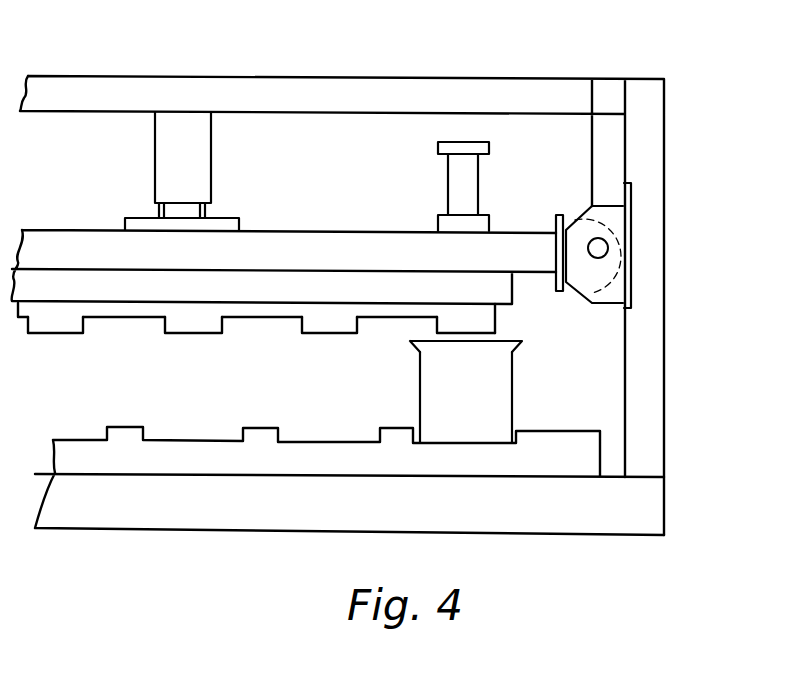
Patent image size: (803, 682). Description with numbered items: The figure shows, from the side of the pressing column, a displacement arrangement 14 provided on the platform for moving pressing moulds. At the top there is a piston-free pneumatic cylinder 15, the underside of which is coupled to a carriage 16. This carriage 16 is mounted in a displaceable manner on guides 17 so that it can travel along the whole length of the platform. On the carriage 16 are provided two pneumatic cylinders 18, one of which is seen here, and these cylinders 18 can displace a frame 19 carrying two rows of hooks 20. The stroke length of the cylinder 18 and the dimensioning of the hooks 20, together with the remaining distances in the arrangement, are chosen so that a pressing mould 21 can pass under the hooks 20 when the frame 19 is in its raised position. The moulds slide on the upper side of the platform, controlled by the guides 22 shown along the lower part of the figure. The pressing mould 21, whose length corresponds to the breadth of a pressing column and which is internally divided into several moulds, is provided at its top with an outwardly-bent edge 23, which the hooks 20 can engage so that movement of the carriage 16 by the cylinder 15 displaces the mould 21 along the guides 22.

The displacement arrangement 14 is at (558, 78).
The piston-free pneumatic cylinder 15 is at (200, 148).
The carriage 16 is at (337, 230).
The guides 17 is at (598, 248).
The pneumatic cylinders 18 is at (473, 187).
The frame 19 is at (262, 323).
The hooks 20 is at (193, 322).
The pressing mould 21 is at (472, 402).
The guides 22 is at (380, 430).
The outwardly-bent edge 23 is at (410, 343).